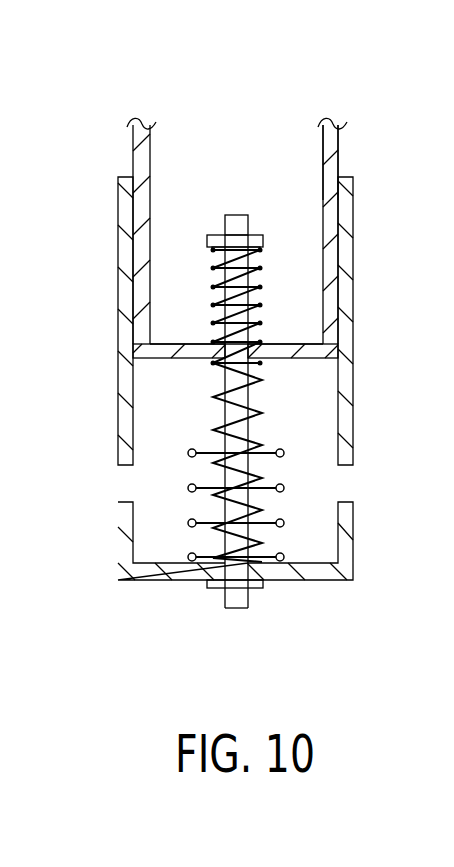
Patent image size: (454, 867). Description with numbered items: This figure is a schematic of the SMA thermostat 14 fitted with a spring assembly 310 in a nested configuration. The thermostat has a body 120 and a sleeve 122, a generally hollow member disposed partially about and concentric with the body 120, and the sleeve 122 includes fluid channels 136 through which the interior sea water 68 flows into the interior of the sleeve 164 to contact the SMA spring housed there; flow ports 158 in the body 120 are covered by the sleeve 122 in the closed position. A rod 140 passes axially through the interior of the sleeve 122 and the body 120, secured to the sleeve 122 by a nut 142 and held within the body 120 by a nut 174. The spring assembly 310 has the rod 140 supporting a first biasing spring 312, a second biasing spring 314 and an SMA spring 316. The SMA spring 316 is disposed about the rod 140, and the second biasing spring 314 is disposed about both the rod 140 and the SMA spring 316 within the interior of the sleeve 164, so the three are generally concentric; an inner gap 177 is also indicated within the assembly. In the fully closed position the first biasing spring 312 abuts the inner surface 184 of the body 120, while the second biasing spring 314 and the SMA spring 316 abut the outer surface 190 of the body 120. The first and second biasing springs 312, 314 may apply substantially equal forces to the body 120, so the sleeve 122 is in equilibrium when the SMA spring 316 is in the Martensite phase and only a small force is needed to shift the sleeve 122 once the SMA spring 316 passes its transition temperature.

The SMA thermostat 14 is at (143, 95).
The body 120 is at (330, 167).
The flow ports 158 is at (140, 243).
The nut 174 is at (217, 238).
The first biasing spring 312 is at (260, 323).
The inner surface 184 is at (172, 345).
The interior sea water 68 is at (424, 332).
The outer surface 190 is at (185, 353).
The spring assembly 310 is at (183, 415).
The SMA spring 316 is at (252, 414).
The sleeve 122 is at (347, 415).
The inner gap 177 is at (313, 443).
The fluid channels 136 is at (120, 480).
The second biasing spring 314 is at (285, 488).
The interior of the sleeve 164 is at (158, 540).
The nut 142 is at (212, 590).
The rod 140 is at (240, 598).